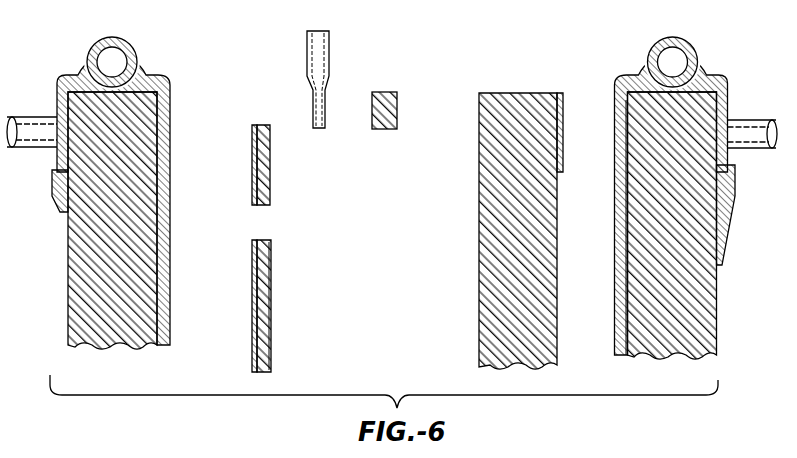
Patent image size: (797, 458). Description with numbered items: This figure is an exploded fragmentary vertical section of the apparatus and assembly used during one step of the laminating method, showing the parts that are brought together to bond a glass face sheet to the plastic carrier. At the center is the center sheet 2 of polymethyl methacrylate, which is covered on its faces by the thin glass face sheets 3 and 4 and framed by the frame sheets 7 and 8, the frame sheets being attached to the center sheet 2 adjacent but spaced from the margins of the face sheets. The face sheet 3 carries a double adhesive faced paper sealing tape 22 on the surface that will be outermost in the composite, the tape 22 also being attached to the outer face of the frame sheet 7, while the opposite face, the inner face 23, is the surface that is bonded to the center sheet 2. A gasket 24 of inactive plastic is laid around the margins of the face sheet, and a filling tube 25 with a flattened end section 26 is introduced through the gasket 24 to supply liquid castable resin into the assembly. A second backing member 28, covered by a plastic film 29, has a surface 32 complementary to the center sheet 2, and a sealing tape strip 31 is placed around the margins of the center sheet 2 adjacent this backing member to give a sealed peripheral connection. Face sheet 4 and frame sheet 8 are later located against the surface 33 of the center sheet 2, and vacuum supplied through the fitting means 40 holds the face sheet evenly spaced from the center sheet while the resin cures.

The center sheet 2 is at (556, 245).
The face sheet 3 is at (304, 306).
The face sheet 4 is at (268, 308).
The frame sheet 7 is at (305, 165).
The frame sheet 8 is at (268, 153).
The sealing tape 22 is at (252, 141).
The inner face 23 is at (272, 268).
The gasket 24 is at (438, 99).
The surface 33 is at (397, 101).
The filling tube 25 is at (330, 56).
The flattened end section 26 is at (327, 102).
The second backing member 28 is at (716, 322).
The plastic film 29 is at (616, 182).
The sealing tape strip 31 is at (563, 115).
The surface 32 is at (617, 248).
The fitting means 40 is at (750, 150).